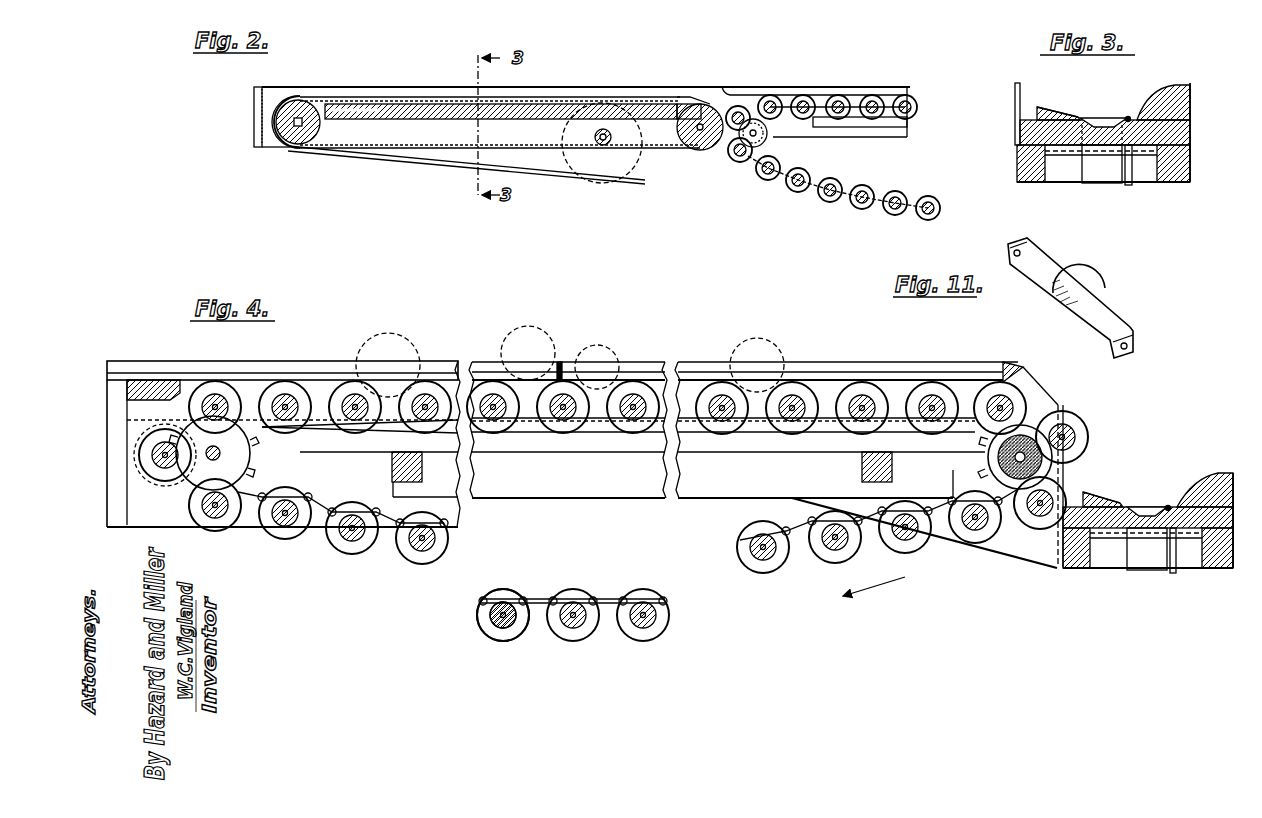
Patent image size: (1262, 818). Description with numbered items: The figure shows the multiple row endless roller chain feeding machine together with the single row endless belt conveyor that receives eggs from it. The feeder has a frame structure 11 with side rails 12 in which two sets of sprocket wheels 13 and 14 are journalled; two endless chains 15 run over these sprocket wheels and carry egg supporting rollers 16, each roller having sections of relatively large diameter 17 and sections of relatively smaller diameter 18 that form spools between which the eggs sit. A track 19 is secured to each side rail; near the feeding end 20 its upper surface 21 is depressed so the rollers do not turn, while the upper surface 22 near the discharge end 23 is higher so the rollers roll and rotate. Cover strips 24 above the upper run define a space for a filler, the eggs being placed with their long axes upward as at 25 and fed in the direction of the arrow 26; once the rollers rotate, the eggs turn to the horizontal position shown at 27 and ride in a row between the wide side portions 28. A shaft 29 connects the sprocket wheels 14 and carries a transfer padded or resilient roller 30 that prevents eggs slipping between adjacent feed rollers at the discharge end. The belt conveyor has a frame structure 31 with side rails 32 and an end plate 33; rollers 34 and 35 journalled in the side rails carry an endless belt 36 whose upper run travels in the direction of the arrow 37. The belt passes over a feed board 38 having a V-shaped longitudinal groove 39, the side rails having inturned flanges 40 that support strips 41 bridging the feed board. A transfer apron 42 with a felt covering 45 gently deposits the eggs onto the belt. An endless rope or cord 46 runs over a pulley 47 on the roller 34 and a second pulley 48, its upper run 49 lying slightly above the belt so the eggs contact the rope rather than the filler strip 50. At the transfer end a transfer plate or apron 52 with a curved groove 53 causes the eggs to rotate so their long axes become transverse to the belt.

In FIG. 4, the frame structure 11 is at (708, 500).
In FIG. 4, the side rails 12 is at (545, 490).
In FIG. 4, the sprocket wheels 13 is at (233, 455).
In FIG. 4, the sprocket wheels 14 is at (990, 458).
In FIG. 4, the endless chains 15 is at (600, 430).
In FIG. 4, the egg supporting rollers 16 is at (560, 430).
In FIG. 4, the sections of relatively large diameter 17 is at (481, 631).
In FIG. 4, the sections of relatively smaller diameter 18 is at (505, 632).
In FIG. 4, the track 19 is at (730, 445).
In FIG. 4, the feeding end 20 is at (125, 360).
In FIG. 4, the upper surface 21 is at (357, 437).
In FIG. 4, the upper surface 22 is at (768, 440).
In FIG. 4, the discharge end 23 is at (1063, 393).
In FIG. 4, the cover strips 24 is at (328, 375).
In FIG. 4, the eggs with long axes upward 25 is at (413, 350).
In FIG. 4, the arrow 26 is at (690, 333).
In FIG. 4, the eggs with long axes horizontal 27 is at (776, 357).
In FIG. 4, the wide side portions 28 is at (912, 376).
In FIG. 4, the shaft 29 is at (1031, 516).
In FIG. 4, the transfer padded or resilient roller 30 is at (1003, 467).
In FIG. 2, the frame structure 31 is at (635, 87).
In FIG. 3, the frame structure 31 is at (1146, 100).
In FIG. 4, the frame structure 31 is at (1222, 478).
In FIG. 2, the side rails 32 is at (388, 96).
In FIG. 3, the side rails 32 is at (1015, 100).
In FIG. 2, the end plate 33 is at (254, 118).
In FIG. 2, the roller 34 is at (305, 104).
In FIG. 3, the roller 34 is at (1097, 165).
In FIG. 4, the roller 34 is at (1145, 565).
In FIG. 2, the roller 35 is at (705, 104).
In FIG. 2, the endless belt 36 is at (666, 101).
In FIG. 3, the endless belt 36 is at (1105, 119).
In FIG. 4, the endless belt 36 is at (1147, 509).
In FIG. 2, the arrow 37 is at (580, 76).
In FIG. 2, the feed board 38 is at (428, 110).
In FIG. 3, the feed board 38 is at (1190, 130).
In FIG. 4, the feed board 38 is at (1148, 517).
In FIG. 2, the V-shaped longitudinal groove 39 is at (384, 110).
In FIG. 3, the V-shaped longitudinal groove 39 is at (1085, 150).
In FIG. 4, the V-shaped longitudinal groove 39 is at (1120, 548).
In FIG. 3, the inturned flanges 40 is at (1178, 183).
In FIG. 4, the inturned flanges 40 is at (1213, 575).
In FIG. 3, the strips 41 is at (1020, 160).
In FIG. 4, the strips 41 is at (1225, 572).
In FIG. 3, the transfer apron 42 is at (1049, 107).
In FIG. 4, the transfer apron 42 is at (1095, 491).
In FIG. 3, the felt covering 45 is at (1066, 113).
In FIG. 4, the felt covering 45 is at (1110, 498).
In FIG. 2, the endless rope or cord 46 is at (558, 181).
In FIG. 3, the endless rope or cord 46 is at (1130, 182).
In FIG. 4, the endless rope or cord 46 is at (1172, 575).
In FIG. 2, the pulley 47 is at (283, 151).
In FIG. 2, the second pulley 48 is at (617, 160).
In FIG. 2, the upper run 49 is at (438, 99).
In FIG. 3, the filler strip 50 is at (1190, 99).
In FIG. 4, the filler strip 50 is at (1200, 487).
In FIG. 2, the transfer plate or apron 52 is at (745, 110).
In FIG. 11, the transfer plate or apron 52 is at (1069, 258).
In FIG. 11, the curved groove 53 is at (1100, 288).